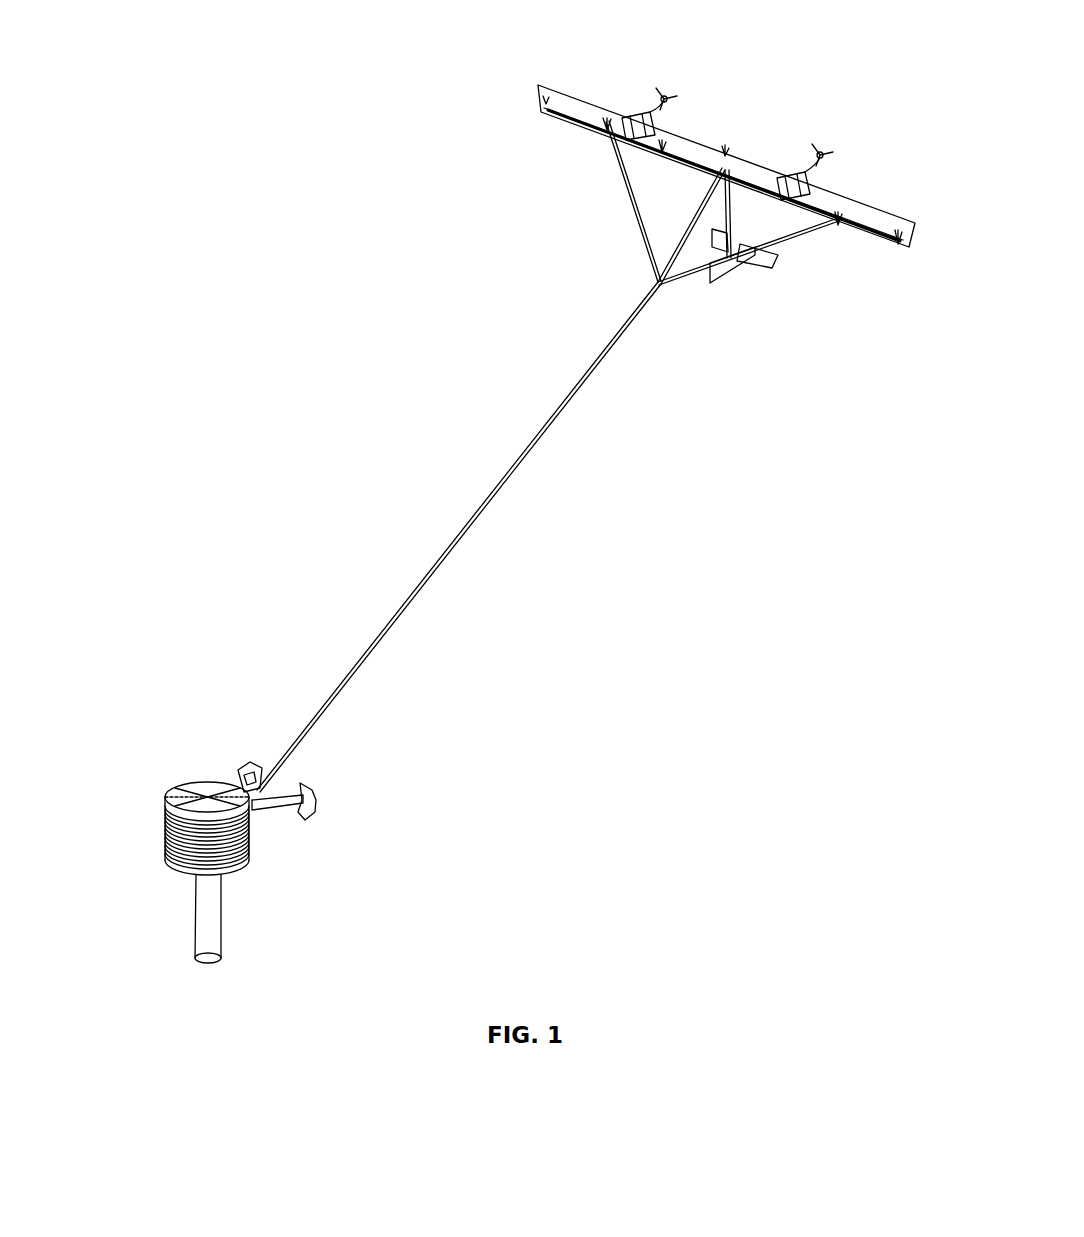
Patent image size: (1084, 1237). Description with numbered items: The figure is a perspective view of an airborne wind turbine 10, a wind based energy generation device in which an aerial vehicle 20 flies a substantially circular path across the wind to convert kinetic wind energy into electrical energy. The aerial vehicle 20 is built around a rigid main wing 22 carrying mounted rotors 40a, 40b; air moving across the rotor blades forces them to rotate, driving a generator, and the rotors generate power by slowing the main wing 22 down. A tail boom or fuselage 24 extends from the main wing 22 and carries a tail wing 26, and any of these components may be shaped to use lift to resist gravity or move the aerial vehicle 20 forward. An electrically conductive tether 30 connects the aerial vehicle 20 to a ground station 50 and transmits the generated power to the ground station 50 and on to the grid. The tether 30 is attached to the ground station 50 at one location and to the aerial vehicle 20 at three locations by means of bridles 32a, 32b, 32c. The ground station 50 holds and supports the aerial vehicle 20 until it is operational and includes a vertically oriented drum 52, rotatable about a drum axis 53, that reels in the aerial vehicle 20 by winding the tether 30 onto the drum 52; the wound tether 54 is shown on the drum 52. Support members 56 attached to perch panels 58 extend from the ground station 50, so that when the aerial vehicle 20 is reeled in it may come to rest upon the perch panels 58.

The airborne wind turbine 10 is at (340, 118).
The aerial vehicle 20 is at (746, 158).
The main wing 22 is at (866, 215).
The tail boom 24 is at (740, 203).
The tail wing 26 is at (738, 270).
The electrically conductive tether 30 is at (588, 372).
The bridle 32a is at (612, 175).
The bridle 32b is at (680, 232).
The bridle 32c is at (808, 222).
The rotor 40a is at (632, 113).
The rotor 40b is at (664, 96).
The ground station 50 is at (128, 775).
The drum 52 is at (248, 858).
The drum axis 53 is at (205, 797).
The wound line 54 is at (270, 792).
The support member 56 is at (275, 810).
The perch panel 58 is at (248, 765).